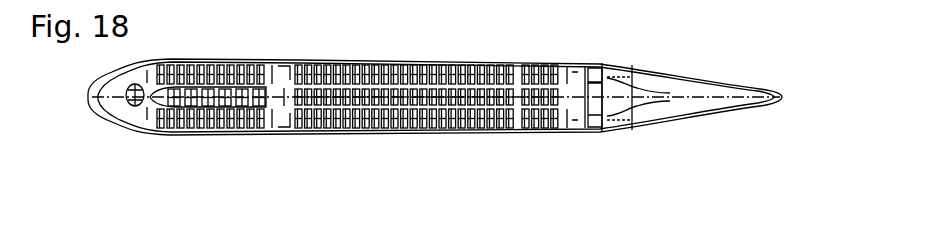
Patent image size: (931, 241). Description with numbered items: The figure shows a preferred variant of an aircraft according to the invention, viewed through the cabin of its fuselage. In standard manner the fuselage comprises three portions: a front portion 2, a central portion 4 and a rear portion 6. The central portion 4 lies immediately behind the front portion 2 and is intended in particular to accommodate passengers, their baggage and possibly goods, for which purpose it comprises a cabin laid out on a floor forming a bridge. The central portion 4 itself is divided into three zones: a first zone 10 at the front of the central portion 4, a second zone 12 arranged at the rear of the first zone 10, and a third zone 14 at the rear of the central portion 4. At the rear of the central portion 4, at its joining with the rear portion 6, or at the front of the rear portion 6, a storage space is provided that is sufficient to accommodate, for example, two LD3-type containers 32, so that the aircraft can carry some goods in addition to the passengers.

The front portion 2 is at (117, 102).
The central portion 4 is at (443, 63).
The rear portion 6 is at (760, 95).
The first zone 10 is at (168, 134).
The second zone 12 is at (247, 134).
The third zone 14 is at (422, 134).
The LD3-type containers 32 is at (652, 103).